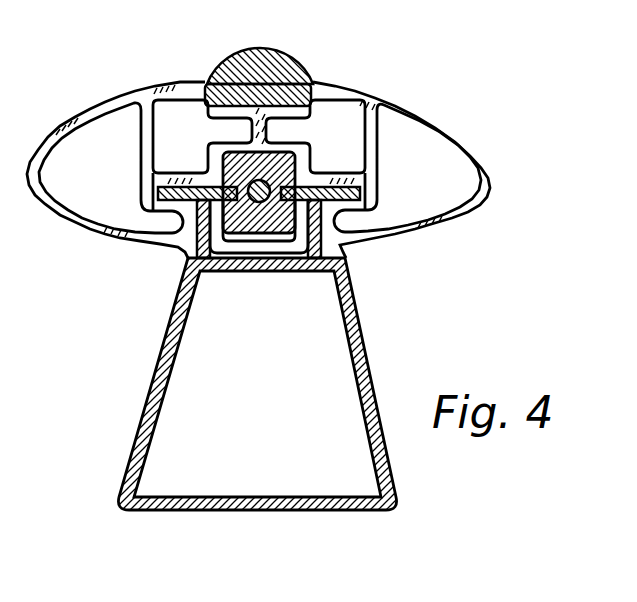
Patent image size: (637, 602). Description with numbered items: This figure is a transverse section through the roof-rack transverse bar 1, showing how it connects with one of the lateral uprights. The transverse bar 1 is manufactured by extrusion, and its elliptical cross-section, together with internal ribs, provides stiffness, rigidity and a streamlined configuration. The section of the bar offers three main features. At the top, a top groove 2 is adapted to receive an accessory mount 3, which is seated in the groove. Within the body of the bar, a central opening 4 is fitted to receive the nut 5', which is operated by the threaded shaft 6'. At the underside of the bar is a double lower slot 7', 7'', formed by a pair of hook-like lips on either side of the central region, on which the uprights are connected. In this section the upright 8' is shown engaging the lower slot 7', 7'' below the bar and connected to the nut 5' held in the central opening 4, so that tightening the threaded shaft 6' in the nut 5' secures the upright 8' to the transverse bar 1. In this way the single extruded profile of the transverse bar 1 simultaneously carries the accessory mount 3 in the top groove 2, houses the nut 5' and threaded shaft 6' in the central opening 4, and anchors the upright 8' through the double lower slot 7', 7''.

The transverse bar 1 is at (468, 157).
The top groove 2 is at (312, 87).
The accessory mount 3 is at (259, 52).
The central opening 4 is at (202, 136).
The nut 5' is at (280, 180).
The threaded shaft 6' is at (263, 249).
The lower slot 7' is at (149, 231).
The lower slot 7'' is at (363, 227).
The upright 8' is at (241, 348).